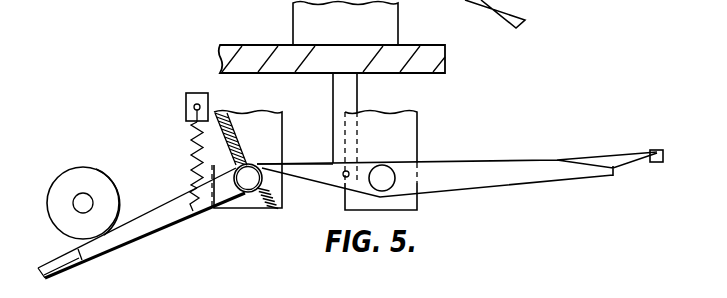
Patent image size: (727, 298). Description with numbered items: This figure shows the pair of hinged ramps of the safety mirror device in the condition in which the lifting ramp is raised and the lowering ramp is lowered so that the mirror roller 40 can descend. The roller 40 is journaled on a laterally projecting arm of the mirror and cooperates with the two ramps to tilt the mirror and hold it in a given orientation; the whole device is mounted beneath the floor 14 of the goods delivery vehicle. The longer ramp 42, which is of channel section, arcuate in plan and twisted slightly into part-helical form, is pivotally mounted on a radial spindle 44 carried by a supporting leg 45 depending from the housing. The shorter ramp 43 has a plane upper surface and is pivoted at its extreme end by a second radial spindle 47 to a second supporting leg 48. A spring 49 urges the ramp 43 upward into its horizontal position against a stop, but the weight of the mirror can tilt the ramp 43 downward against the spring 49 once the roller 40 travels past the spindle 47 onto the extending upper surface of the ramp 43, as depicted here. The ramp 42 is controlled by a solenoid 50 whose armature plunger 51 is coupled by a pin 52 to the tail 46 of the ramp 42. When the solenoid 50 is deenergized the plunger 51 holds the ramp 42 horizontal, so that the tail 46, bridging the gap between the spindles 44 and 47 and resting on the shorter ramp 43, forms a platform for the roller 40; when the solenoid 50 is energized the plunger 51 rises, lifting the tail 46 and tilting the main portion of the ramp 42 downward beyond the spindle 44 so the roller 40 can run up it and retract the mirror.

The floor 14 is at (431, 53).
The roller 40 is at (73, 182).
The ramp 42 is at (481, 172).
The ramp 43 is at (163, 218).
The spindle 44 is at (382, 168).
The supporting leg 45 is at (418, 122).
The tail 46 is at (313, 166).
The second radial spindle 47 is at (247, 190).
The second supporting leg 48 is at (255, 118).
The spring 49 is at (196, 165).
The solenoid 50 is at (298, 25).
The armature plunger 51 is at (335, 97).
The pin 52 is at (343, 177).